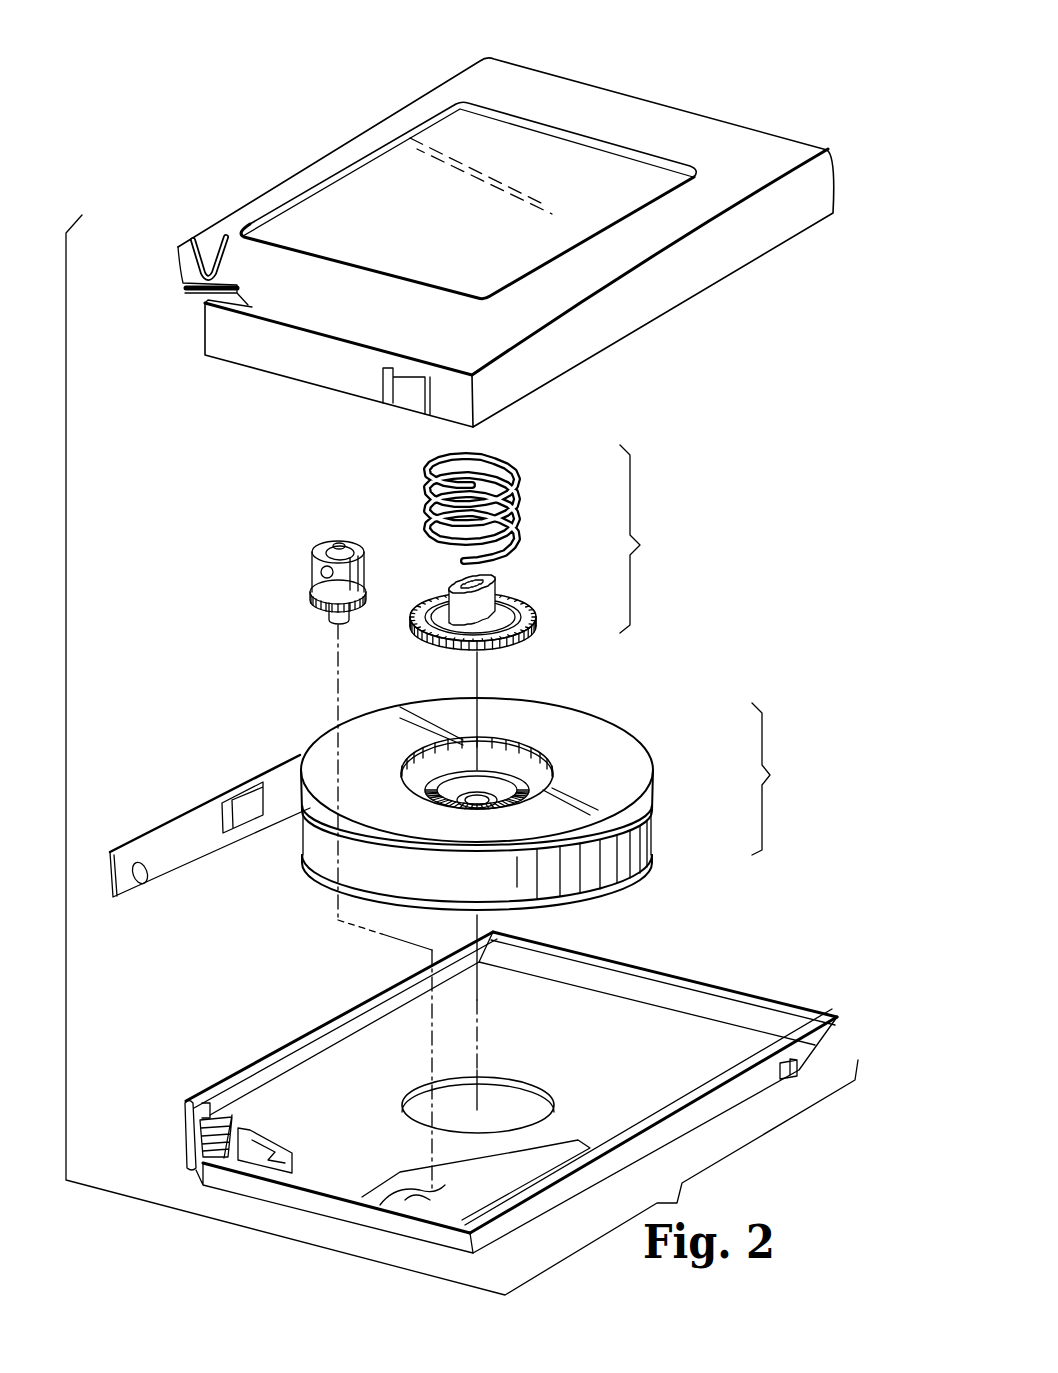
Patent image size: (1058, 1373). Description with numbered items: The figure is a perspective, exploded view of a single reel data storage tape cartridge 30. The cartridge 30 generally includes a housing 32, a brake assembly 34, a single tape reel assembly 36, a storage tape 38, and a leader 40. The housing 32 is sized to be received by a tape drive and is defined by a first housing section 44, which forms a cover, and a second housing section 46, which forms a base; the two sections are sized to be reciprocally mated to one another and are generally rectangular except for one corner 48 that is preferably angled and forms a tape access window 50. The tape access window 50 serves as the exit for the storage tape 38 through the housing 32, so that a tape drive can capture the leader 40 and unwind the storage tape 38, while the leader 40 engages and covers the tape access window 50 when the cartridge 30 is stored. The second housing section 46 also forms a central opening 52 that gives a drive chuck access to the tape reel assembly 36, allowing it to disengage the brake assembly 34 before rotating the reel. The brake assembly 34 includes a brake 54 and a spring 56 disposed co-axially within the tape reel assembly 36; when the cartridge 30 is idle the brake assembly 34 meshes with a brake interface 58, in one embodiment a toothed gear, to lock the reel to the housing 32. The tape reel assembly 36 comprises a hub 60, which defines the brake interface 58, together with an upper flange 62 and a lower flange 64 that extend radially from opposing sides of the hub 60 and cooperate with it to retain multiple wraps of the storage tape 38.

The single reel data storage tape cartridge 30 is at (797, 77).
The housing 32 is at (796, 120).
The brake assembly 34 is at (492, 817).
The single tape reel assembly 36 is at (553, 789).
The storage tape 38 is at (272, 783).
The leader 40 is at (123, 887).
The first housing section 44 is at (469, 241).
The second housing section 46 is at (468, 1079).
The corner 48 is at (182, 275).
The tape access window 50 is at (180, 1142).
The central opening 52 is at (523, 1085).
The brake 54 is at (538, 626).
The spring 56 is at (517, 504).
The brake interface 58 is at (440, 745).
The hub 60 is at (528, 759).
The upper flange 62 is at (635, 763).
The lower flange 64 is at (645, 830).